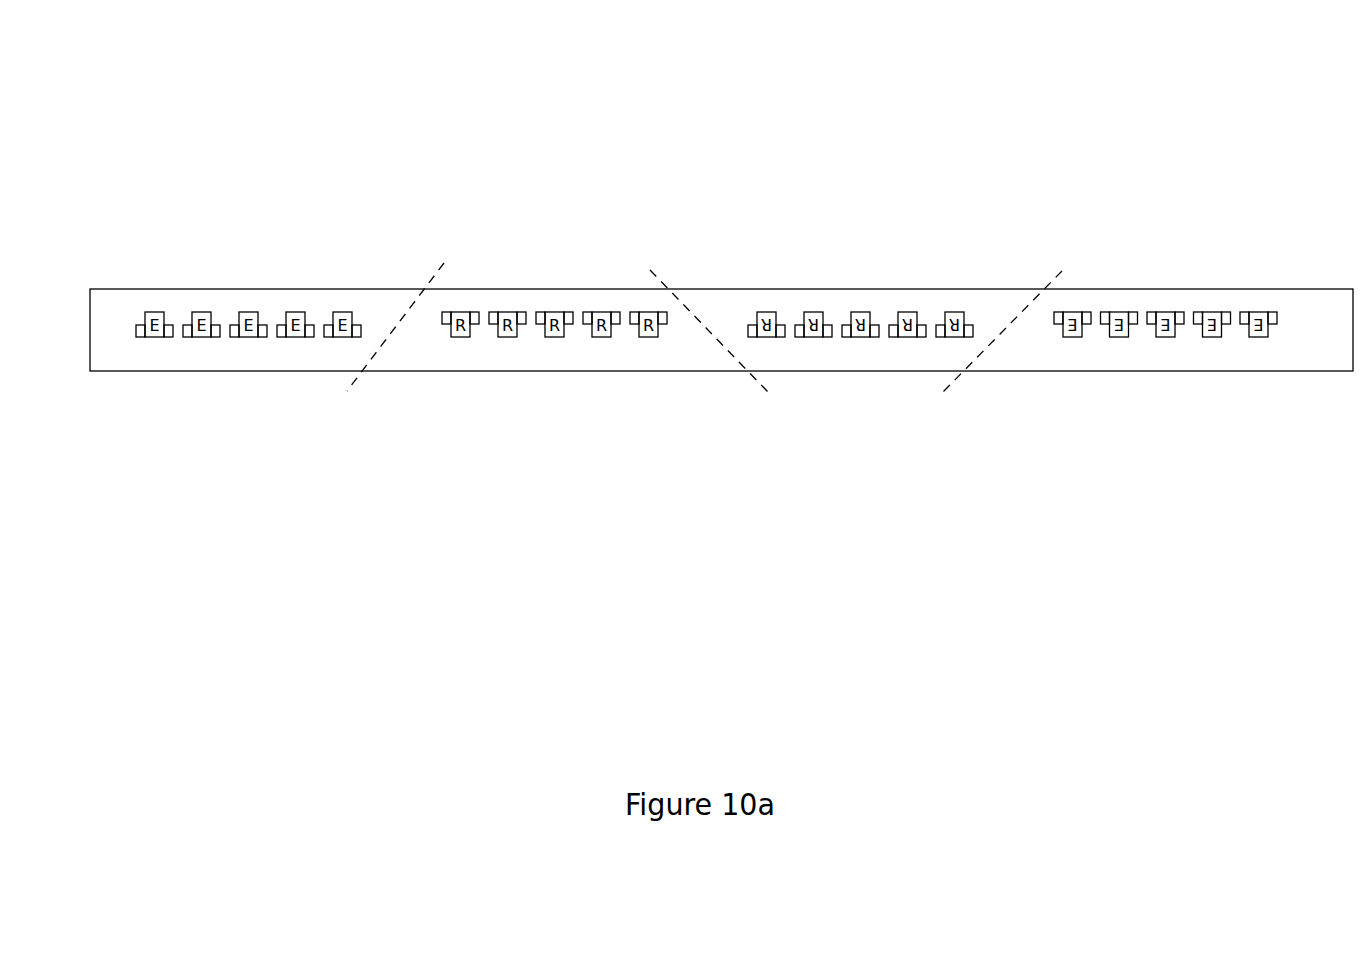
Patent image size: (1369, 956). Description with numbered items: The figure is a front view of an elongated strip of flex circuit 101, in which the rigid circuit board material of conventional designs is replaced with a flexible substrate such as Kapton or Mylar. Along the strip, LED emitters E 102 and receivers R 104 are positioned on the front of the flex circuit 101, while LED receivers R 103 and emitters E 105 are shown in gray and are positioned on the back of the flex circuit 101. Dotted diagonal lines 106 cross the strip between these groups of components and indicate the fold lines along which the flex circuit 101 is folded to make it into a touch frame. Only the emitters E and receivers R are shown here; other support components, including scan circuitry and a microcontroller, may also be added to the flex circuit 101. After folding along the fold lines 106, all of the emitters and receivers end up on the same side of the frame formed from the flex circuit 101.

The flex circuit 101 is at (263, 289).
The LED emitters E 102 is at (252, 338).
The LED receivers R 103 is at (505, 312).
The receivers R 104 is at (799, 337).
The emitters E 105 is at (1180, 312).
The dotted diagonal lines 106 is at (347, 393).